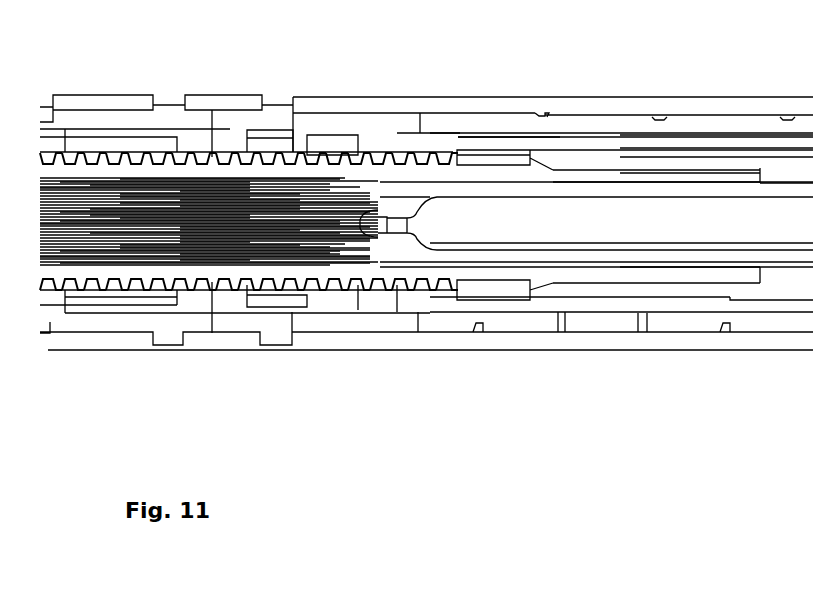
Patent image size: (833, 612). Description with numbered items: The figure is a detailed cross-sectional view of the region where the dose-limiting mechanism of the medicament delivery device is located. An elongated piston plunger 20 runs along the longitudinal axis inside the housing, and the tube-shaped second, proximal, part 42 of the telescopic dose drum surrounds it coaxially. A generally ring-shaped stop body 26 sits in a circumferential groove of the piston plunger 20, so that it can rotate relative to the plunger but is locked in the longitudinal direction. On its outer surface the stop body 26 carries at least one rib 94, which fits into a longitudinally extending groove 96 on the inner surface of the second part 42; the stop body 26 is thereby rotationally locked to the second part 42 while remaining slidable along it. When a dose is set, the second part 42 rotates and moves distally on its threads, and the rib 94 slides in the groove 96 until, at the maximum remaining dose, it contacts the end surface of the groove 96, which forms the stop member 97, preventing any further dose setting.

The piston plunger 20 is at (352, 170).
The stop member 97 is at (458, 137).
The rib 94 is at (487, 150).
The longitudinally extending groove 96 is at (640, 150).
The second, proximal, part 42 is at (737, 145).
The stop body 26 is at (512, 283).